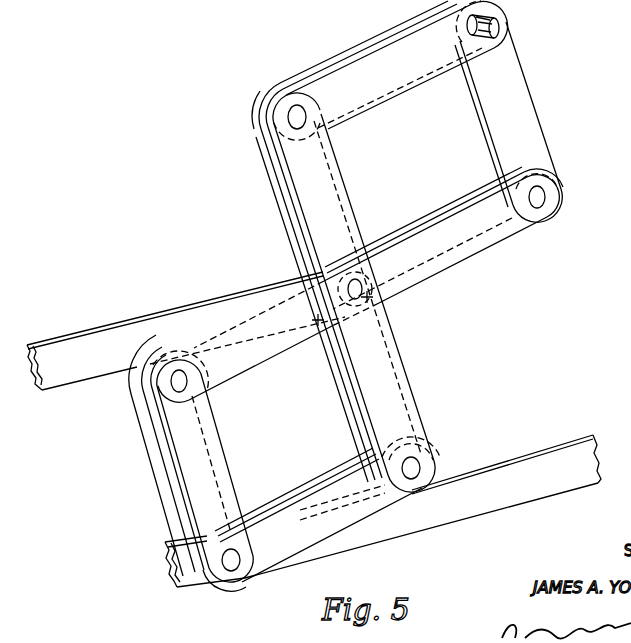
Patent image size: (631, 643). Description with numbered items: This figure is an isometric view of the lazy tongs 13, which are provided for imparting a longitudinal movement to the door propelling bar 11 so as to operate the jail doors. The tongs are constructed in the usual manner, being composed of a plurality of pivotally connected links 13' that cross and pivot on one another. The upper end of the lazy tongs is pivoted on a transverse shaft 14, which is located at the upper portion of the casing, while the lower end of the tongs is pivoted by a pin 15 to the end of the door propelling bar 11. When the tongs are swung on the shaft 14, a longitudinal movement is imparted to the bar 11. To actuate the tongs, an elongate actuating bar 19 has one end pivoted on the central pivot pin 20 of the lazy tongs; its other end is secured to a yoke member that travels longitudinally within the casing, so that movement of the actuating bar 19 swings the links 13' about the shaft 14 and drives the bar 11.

The door propelling bar 11 is at (525, 472).
The lazy tongs 13 is at (376, 298).
The pivotally connected links 13' is at (343, 296).
The transverse shaft 14 is at (498, 24).
The pin 15 is at (198, 575).
The actuating bar 19 is at (108, 342).
The central pivot pin 20 is at (347, 283).